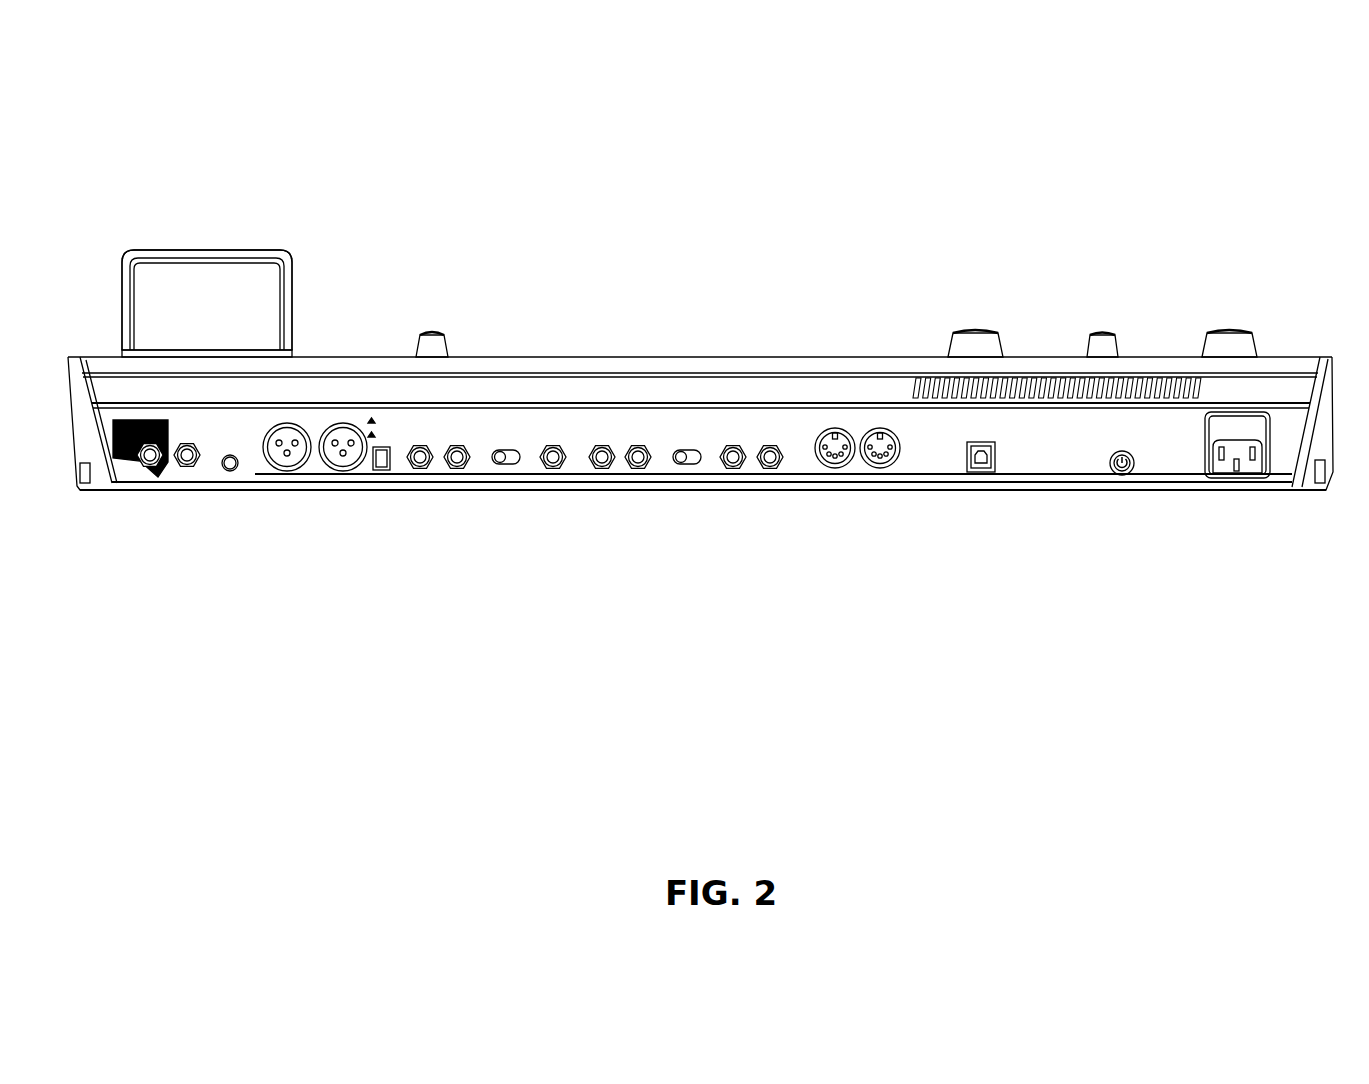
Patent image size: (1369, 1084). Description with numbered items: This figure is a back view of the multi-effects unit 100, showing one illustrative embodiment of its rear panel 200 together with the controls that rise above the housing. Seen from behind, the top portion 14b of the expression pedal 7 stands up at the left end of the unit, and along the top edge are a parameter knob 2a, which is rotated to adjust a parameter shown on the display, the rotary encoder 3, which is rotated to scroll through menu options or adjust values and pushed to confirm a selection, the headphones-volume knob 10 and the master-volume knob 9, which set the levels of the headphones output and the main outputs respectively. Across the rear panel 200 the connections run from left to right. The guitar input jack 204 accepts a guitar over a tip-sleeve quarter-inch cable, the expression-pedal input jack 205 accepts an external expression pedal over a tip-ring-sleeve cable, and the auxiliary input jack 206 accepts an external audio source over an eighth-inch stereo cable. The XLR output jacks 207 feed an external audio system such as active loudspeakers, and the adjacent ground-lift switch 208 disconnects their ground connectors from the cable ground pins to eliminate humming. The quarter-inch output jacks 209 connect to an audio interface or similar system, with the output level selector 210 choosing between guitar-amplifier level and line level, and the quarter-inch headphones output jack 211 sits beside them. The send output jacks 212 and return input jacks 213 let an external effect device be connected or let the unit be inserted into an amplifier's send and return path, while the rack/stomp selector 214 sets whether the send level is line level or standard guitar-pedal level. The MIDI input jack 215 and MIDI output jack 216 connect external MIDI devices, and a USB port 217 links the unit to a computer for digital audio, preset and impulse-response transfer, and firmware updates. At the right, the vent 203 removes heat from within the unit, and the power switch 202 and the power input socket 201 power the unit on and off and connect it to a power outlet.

The multi-effects unit 100 is at (788, 147).
The top portion 14b is at (215, 250).
The expression pedal 7 is at (292, 332).
The parameter knob 2a is at (432, 333).
The rotary encoder 3 is at (980, 332).
The headphones-volume knob 10 is at (1103, 333).
The master-volume knob 9 is at (1230, 333).
The vent 203 is at (1042, 377).
The rear panel 200 is at (1013, 467).
The power input socket 201 is at (1242, 488).
The power switch 202 is at (1122, 476).
The guitar input jack 204 is at (152, 470).
The expression-pedal input jack 205 is at (187, 470).
The auxiliary input jack 206 is at (230, 472).
The XLR output jacks 207 is at (265, 496).
The ground-lift switch 208 is at (382, 472).
The ¼-inch output jacks 209 is at (472, 496).
The output level selector 210 is at (508, 465).
The ¼-inch headphones output jack 211 is at (555, 471).
The send output jacks 212 is at (583, 496).
The return input jacks 213 is at (788, 496).
The rack/stomp selector 214 is at (690, 465).
The MIDI input jack 215 is at (835, 469).
The MIDI output jack 216 is at (880, 469).
The USB port 217 is at (985, 442).